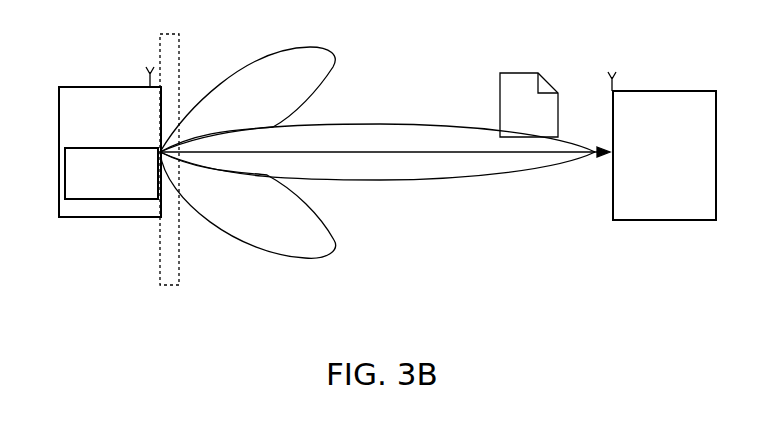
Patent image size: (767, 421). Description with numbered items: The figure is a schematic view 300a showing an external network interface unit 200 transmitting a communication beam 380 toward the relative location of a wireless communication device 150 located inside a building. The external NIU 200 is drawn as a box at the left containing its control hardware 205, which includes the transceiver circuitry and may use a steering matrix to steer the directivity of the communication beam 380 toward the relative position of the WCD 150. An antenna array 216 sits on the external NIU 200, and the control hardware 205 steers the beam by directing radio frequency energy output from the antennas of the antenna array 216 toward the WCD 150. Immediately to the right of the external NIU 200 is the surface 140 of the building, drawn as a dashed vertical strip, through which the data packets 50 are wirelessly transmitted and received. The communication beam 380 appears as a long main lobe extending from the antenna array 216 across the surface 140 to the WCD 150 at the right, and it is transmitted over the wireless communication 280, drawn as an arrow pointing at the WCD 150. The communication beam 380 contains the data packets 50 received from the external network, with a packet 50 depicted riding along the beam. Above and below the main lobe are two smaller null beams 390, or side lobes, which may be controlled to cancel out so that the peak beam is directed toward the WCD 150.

The schematic view 300a is at (609, 25).
The external network interface unit 200 is at (110, 152).
The control hardware 205 is at (111, 173).
The antenna array 216 is at (150, 81).
The surface 140 is at (180, 57).
The communication beam 380 is at (404, 123).
The wireless communication 280 is at (488, 154).
The null beams 390 is at (259, 62).
The data packets 50 is at (517, 73).
The wireless communication device 150 is at (662, 146).